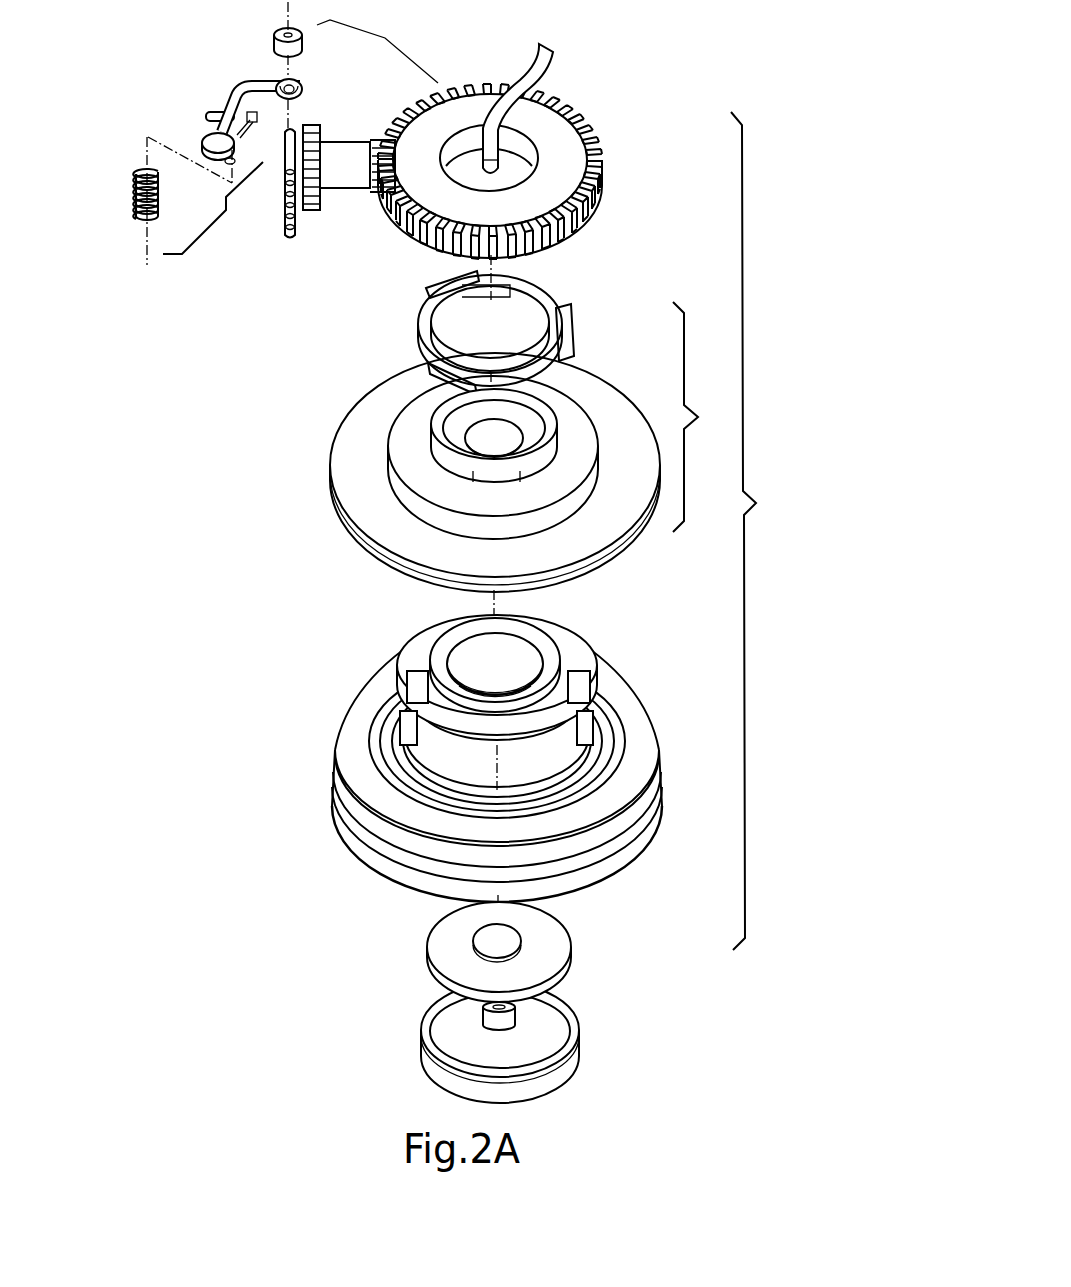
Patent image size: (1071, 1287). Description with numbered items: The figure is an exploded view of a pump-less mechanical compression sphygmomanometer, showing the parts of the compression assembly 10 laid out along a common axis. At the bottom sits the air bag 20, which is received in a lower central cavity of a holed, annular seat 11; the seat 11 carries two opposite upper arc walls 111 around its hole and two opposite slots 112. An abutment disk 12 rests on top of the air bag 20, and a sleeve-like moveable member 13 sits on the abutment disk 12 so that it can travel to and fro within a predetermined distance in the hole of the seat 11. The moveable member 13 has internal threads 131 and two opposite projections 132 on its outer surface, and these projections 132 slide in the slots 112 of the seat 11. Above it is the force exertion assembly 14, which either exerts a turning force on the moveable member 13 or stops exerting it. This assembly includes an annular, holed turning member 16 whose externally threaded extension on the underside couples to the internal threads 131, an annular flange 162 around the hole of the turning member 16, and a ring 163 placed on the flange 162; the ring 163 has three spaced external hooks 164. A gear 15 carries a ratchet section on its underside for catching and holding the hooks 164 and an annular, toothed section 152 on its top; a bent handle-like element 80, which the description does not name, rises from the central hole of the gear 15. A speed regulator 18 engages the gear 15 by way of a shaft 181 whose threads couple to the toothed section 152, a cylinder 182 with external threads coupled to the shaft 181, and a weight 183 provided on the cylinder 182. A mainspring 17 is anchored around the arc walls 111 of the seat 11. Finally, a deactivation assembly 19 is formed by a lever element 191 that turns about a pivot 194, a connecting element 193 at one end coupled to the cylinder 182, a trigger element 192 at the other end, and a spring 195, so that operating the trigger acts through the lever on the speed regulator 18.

The compression assembly 10 is at (758, 531).
The annular seat 11 is at (491, 766).
The arc walls 111 is at (420, 763).
The slots 112 is at (380, 753).
The abutment disk 12 is at (550, 938).
The moveable member 13 is at (538, 668).
The internal threads 131 is at (468, 652).
The projections 132 is at (587, 657).
The force exertion assembly 14 is at (698, 417).
The gear 15 is at (498, 194).
The toothed section 152 is at (410, 238).
The turning member 16 is at (343, 463).
The annular flange 162 is at (448, 453).
The ring 163 is at (535, 327).
The external hooks 164 is at (580, 327).
The mainspring 17 is at (608, 780).
The speed regulator 18 is at (377, 49).
The shaft 181 is at (335, 183).
The cylinder 182 is at (295, 200).
The weight 183 is at (302, 36).
The deactivation assembly 19 is at (223, 153).
The lever element 191 is at (245, 82).
The trigger element 192 is at (210, 137).
The connecting element 193 is at (302, 95).
The pivot 194 is at (212, 110).
The spring 195 is at (137, 210).
The air bag 20 is at (562, 1007).
The handle 80 is at (530, 58).